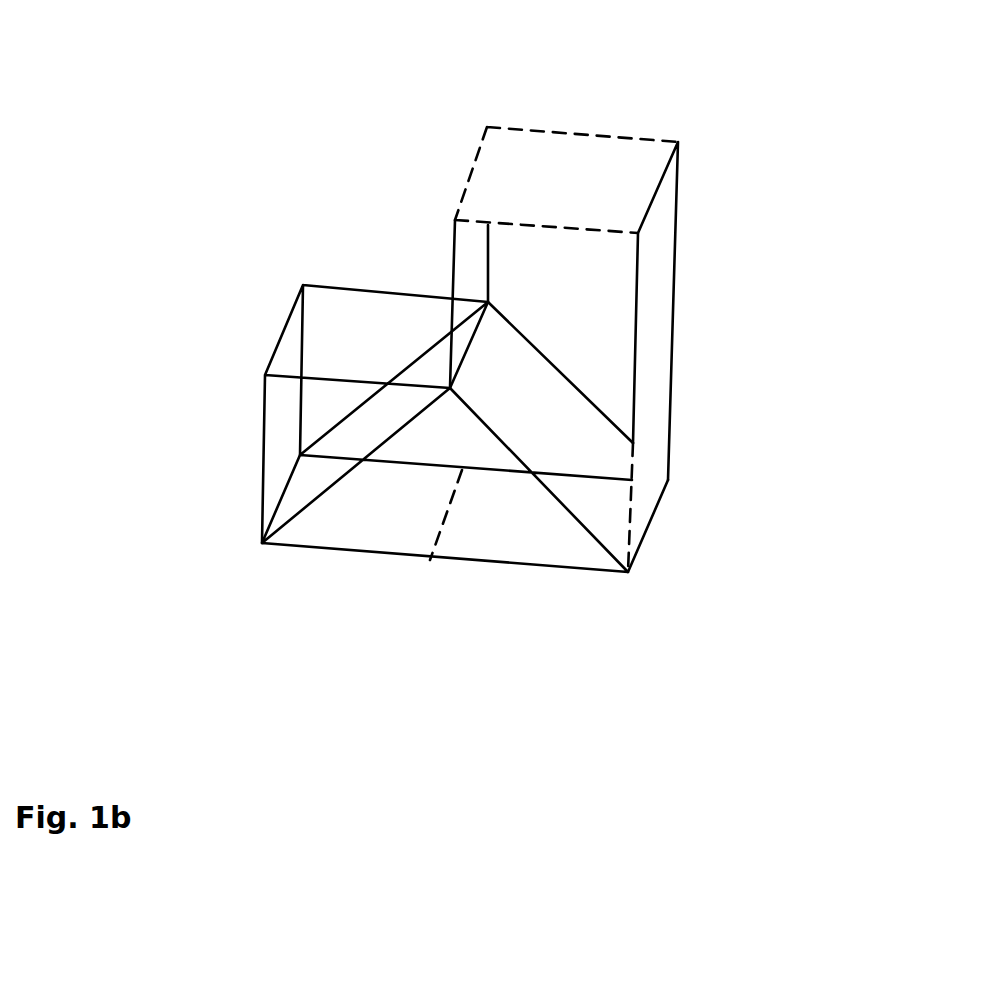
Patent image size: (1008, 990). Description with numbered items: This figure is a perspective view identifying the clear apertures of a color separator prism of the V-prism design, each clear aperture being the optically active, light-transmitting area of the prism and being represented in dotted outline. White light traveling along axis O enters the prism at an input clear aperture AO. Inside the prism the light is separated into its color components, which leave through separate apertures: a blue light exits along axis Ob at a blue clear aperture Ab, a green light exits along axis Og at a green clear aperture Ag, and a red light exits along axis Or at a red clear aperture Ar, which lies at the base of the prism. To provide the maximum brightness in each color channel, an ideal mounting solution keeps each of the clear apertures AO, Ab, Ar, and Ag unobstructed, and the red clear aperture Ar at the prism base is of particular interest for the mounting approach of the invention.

The blue clear aperture Ab is at (627, 138).
The green clear aperture Ag is at (265, 368).
The red clear aperture Ar is at (297, 548).
The input clear aperture AO is at (670, 413).
The axis O is at (657, 454).
The axis Ob is at (567, 177).
The axis Og is at (263, 413).
The axis Or is at (350, 507).